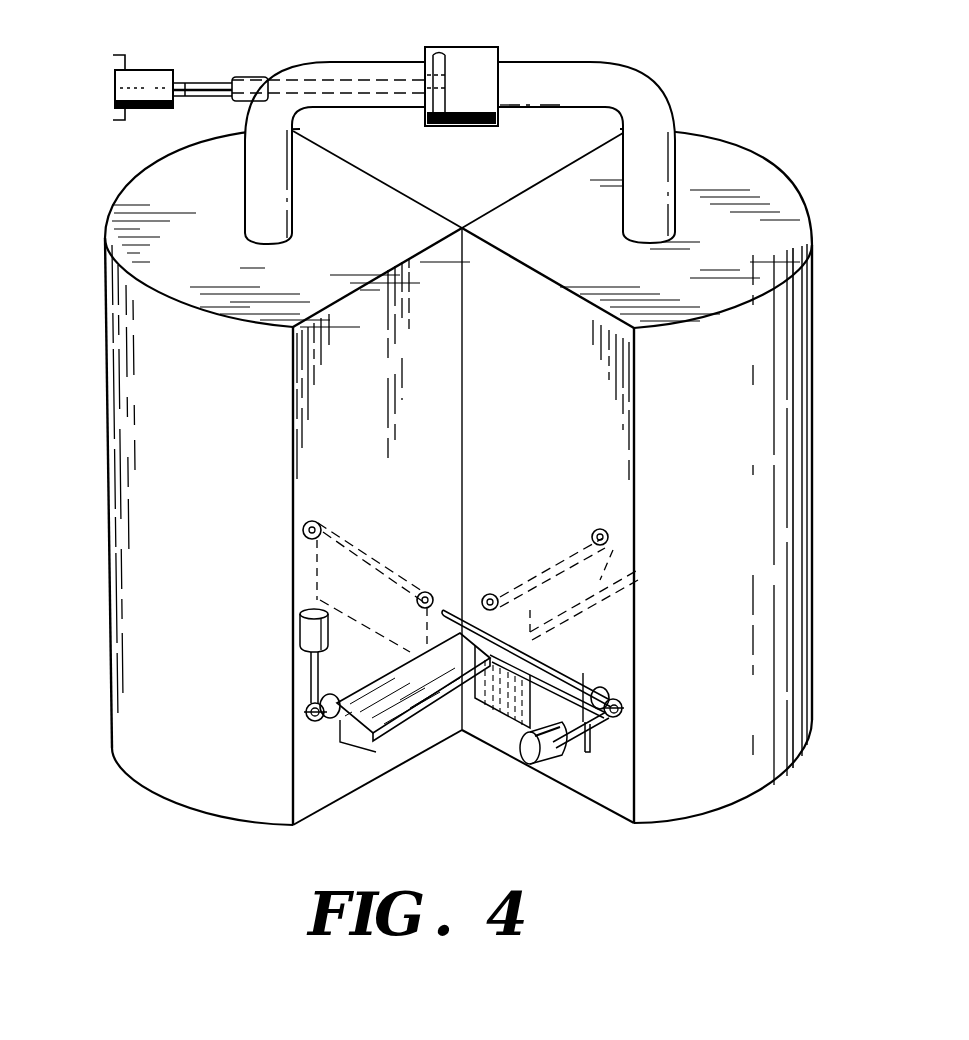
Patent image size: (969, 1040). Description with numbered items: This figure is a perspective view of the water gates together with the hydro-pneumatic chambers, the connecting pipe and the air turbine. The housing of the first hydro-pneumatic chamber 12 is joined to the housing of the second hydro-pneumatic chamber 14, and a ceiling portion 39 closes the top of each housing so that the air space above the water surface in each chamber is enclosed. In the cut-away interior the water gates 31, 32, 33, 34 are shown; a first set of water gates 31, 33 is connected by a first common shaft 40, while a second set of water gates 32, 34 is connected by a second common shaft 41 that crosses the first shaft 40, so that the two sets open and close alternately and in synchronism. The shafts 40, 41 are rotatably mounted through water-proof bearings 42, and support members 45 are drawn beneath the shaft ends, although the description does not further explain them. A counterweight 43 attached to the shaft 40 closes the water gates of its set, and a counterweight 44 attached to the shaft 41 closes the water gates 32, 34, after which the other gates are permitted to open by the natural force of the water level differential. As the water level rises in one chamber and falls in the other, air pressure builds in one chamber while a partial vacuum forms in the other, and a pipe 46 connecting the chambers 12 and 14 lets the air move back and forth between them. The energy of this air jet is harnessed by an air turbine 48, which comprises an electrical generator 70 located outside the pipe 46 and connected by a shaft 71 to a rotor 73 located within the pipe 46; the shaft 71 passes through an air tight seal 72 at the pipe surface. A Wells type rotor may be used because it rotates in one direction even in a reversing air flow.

The first hydro-pneumatic chamber 12 is at (128, 382).
The second hydro-pneumatic chamber 14 is at (780, 398).
The water gate 31 is at (392, 655).
The water gate 32 is at (320, 586).
The water gate 33 is at (636, 555).
The water gate 34 is at (528, 705).
The ceiling portion 39 is at (156, 192).
The first common shaft 40 is at (306, 720).
The second common shaft 41 is at (304, 530).
The water-proof bearings 42 is at (318, 522).
The counterweight 43 is at (300, 632).
The counterweight 44 is at (555, 765).
The support rod 45 is at (310, 673).
The pipe 46 is at (314, 68).
The air turbine 48 is at (456, 47).
The electrical generator 70 is at (146, 70).
The shaft 71 is at (200, 82).
The air tight seal 72 is at (235, 102).
The rotor 73 is at (427, 67).